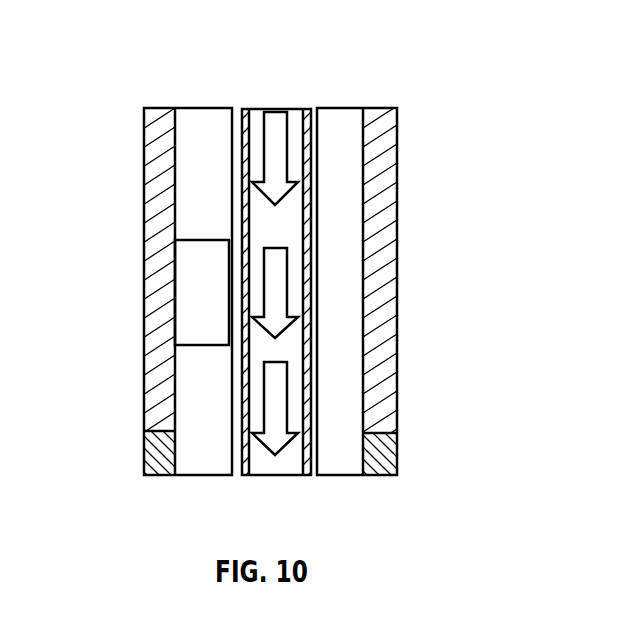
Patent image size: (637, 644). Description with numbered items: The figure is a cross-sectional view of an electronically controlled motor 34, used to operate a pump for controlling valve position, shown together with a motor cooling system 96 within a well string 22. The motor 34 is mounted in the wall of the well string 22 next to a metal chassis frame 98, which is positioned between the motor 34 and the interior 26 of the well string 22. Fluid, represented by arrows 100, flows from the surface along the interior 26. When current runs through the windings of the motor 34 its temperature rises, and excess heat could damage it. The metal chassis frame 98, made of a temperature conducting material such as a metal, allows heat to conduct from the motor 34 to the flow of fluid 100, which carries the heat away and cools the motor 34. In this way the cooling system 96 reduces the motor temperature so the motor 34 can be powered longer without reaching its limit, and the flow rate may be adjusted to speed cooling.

The well string 22 is at (418, 103).
The interior 26 is at (278, 463).
The motor 34 is at (183, 278).
The motor cooling system 96 is at (132, 324).
The metal chassis frame 98 is at (245, 122).
The fluid flow arrows 100 is at (277, 405).